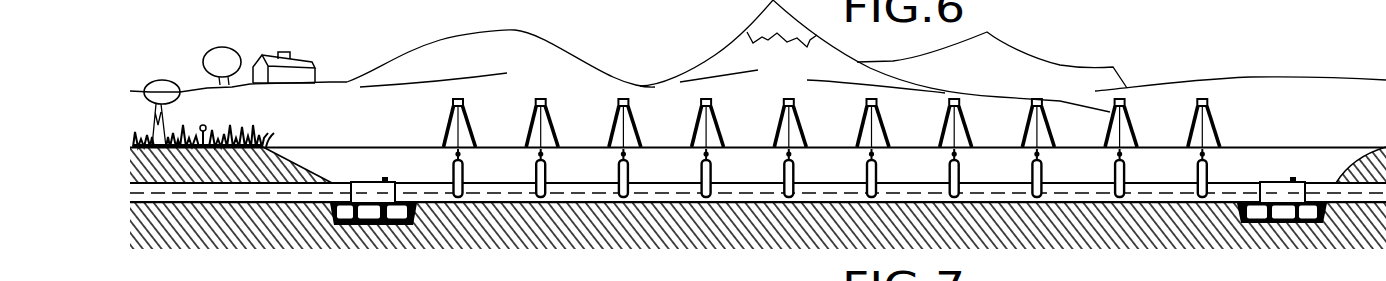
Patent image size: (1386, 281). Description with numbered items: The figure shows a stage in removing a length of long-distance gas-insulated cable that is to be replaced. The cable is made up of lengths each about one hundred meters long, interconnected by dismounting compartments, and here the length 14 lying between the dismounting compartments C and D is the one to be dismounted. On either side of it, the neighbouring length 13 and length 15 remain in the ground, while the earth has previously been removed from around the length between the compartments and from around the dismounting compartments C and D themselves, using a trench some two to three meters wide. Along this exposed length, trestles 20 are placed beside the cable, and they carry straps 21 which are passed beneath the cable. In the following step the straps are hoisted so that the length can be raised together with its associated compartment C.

The length 13 is at (276, 190).
The length 14 is at (762, 190).
The length 15 is at (1334, 189).
The trestle 20 is at (861, 126).
The strap 21 is at (865, 175).
The dismounting compartment C is at (378, 198).
The dismounting compartment D is at (1292, 196).